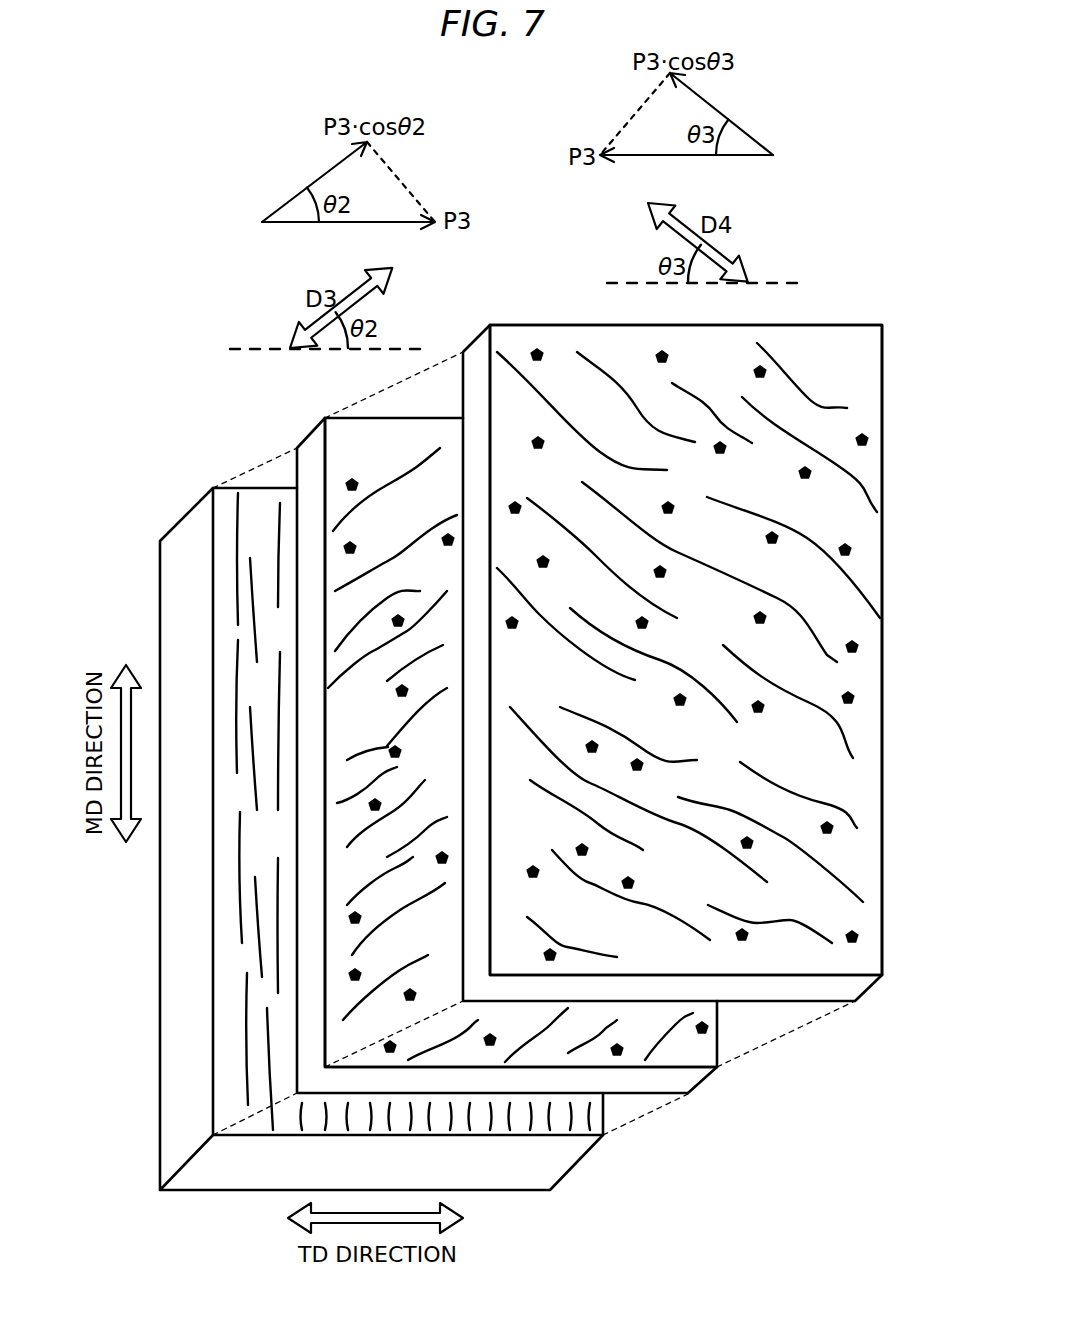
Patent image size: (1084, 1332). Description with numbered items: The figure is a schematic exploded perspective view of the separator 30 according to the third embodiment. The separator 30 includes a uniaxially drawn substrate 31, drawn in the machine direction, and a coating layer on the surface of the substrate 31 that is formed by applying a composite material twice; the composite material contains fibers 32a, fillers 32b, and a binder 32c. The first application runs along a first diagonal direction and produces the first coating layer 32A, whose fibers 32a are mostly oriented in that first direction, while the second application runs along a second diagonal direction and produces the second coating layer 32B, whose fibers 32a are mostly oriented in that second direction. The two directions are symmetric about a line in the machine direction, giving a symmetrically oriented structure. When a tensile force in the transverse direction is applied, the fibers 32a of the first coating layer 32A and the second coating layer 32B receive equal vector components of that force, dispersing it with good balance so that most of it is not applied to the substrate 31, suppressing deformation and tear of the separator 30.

The separator 30 is at (166, 336).
The substrate 31 is at (173, 520).
The first coating layer 32A is at (312, 450).
The second coating layer 32B is at (475, 358).
The fibers 32a is at (392, 483).
The fillers 32b is at (345, 482).
The binder 32c is at (400, 447).